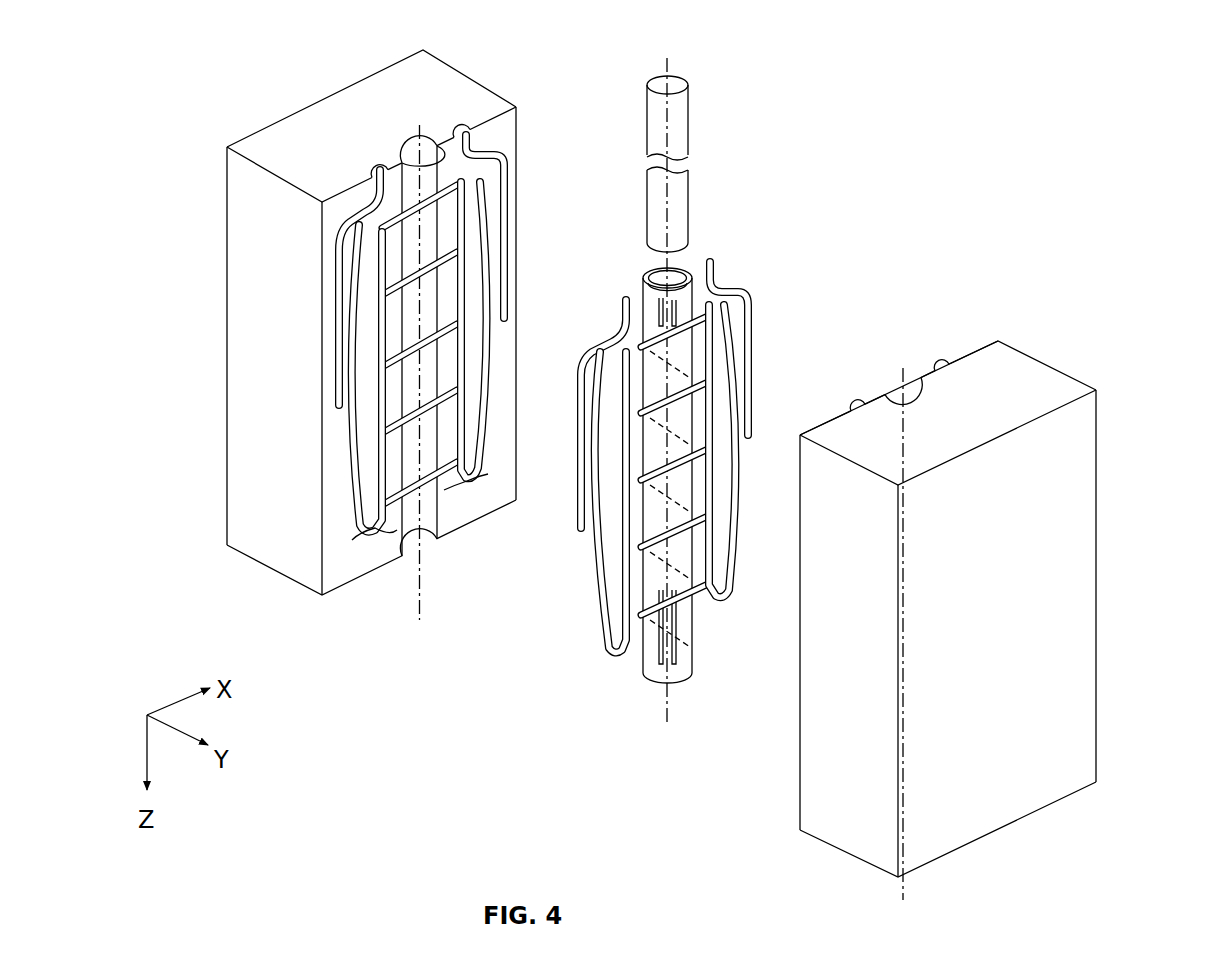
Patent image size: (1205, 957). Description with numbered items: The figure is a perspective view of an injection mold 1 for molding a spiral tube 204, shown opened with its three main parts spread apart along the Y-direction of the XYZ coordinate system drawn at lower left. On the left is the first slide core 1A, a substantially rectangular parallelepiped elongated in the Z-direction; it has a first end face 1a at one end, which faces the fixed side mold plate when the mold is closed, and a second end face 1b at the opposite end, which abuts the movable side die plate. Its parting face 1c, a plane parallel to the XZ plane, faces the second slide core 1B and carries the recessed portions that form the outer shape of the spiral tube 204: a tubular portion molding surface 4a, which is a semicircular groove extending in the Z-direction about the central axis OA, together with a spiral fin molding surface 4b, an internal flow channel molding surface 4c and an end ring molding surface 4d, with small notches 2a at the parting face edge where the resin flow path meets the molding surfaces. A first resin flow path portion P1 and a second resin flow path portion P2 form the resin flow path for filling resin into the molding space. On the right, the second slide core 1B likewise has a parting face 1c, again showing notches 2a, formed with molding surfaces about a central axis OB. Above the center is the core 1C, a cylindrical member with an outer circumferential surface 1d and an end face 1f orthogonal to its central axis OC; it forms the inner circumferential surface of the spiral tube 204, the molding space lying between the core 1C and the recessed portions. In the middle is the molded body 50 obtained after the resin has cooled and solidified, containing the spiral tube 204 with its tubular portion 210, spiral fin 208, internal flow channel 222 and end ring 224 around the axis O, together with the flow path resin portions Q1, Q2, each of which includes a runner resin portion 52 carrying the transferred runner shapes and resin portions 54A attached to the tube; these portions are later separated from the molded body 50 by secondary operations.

The injection mold 1 is at (1000, 282).
The first slide core 1A is at (360, 328).
The second slide core 1B is at (986, 562).
The core 1C is at (679, 141).
The first end face 1a is at (324, 118).
The second end face 1b is at (343, 592).
The parting face 1c is at (511, 135).
The outer circumferential surface 1d is at (646, 108).
The end face 1f is at (648, 690).
The wire groove 2a is at (378, 168).
The tubular portion molding surface 4a is at (428, 165).
The spiral fin molding surface 4b is at (512, 148).
The internal flow channel molding surface 4c is at (421, 148).
The end ring molding surface 4d is at (395, 185).
The molded body 50 is at (686, 414).
The runner resin portion 52 is at (574, 521).
The rod 54A is at (645, 410).
The spiral tube 204 is at (686, 266).
The spiral fin 208 is at (678, 600).
The tubular portion 210 is at (735, 477).
The internal flow channel 222 is at (660, 316).
The end ring 224 is at (670, 489).
The tube axis O is at (670, 712).
The central axis OA is at (421, 604).
The central axis OB is at (907, 886).
The central axis OC is at (668, 65).
The first resin flow path portion P1 is at (378, 545).
The second resin flow path portion P2 is at (470, 490).
The flow path resin portion Q1 is at (603, 658).
The flow path resin portion Q2 is at (725, 618).